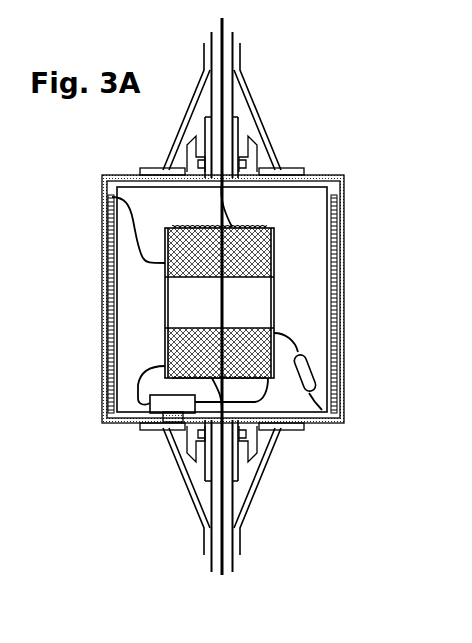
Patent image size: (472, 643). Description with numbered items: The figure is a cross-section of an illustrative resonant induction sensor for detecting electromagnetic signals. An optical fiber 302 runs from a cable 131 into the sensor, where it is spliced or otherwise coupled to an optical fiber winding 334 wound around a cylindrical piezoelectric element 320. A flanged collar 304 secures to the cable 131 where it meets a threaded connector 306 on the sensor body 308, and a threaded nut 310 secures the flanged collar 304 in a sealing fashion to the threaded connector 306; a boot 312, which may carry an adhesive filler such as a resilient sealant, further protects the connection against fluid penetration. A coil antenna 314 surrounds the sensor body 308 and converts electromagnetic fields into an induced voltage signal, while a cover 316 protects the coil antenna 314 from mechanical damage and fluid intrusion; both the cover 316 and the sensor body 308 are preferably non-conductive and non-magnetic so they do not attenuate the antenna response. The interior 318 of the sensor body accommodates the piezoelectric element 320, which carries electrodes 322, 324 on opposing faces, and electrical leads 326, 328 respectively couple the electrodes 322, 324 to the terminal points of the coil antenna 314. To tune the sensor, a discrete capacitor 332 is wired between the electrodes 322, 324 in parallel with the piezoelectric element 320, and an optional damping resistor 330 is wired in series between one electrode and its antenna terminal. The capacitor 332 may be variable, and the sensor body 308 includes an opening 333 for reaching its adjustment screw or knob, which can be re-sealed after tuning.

The optical fiber 302 is at (226, 24).
The boot 312 is at (241, 82).
The cable 131 is at (231, 100).
The flanged collar 304 is at (239, 123).
The threaded nut 310 is at (256, 150).
The threaded connector 306 is at (258, 177).
The cover 316 is at (346, 178).
The sensor body interior 318 is at (313, 213).
The coil antenna 314 is at (344, 300).
The sensor body 308 is at (128, 186).
The cylindrical piezoelectric element 320 is at (262, 233).
The electrode 324 is at (275, 262).
The optical fiber winding 334 is at (210, 226).
The electrical lead 326 is at (143, 264).
The electrode 322 is at (165, 342).
The electrical lead 328 is at (291, 338).
The discrete resistor 330 is at (304, 378).
The discrete capacitor 332 is at (157, 404).
The opening 333 is at (167, 418).